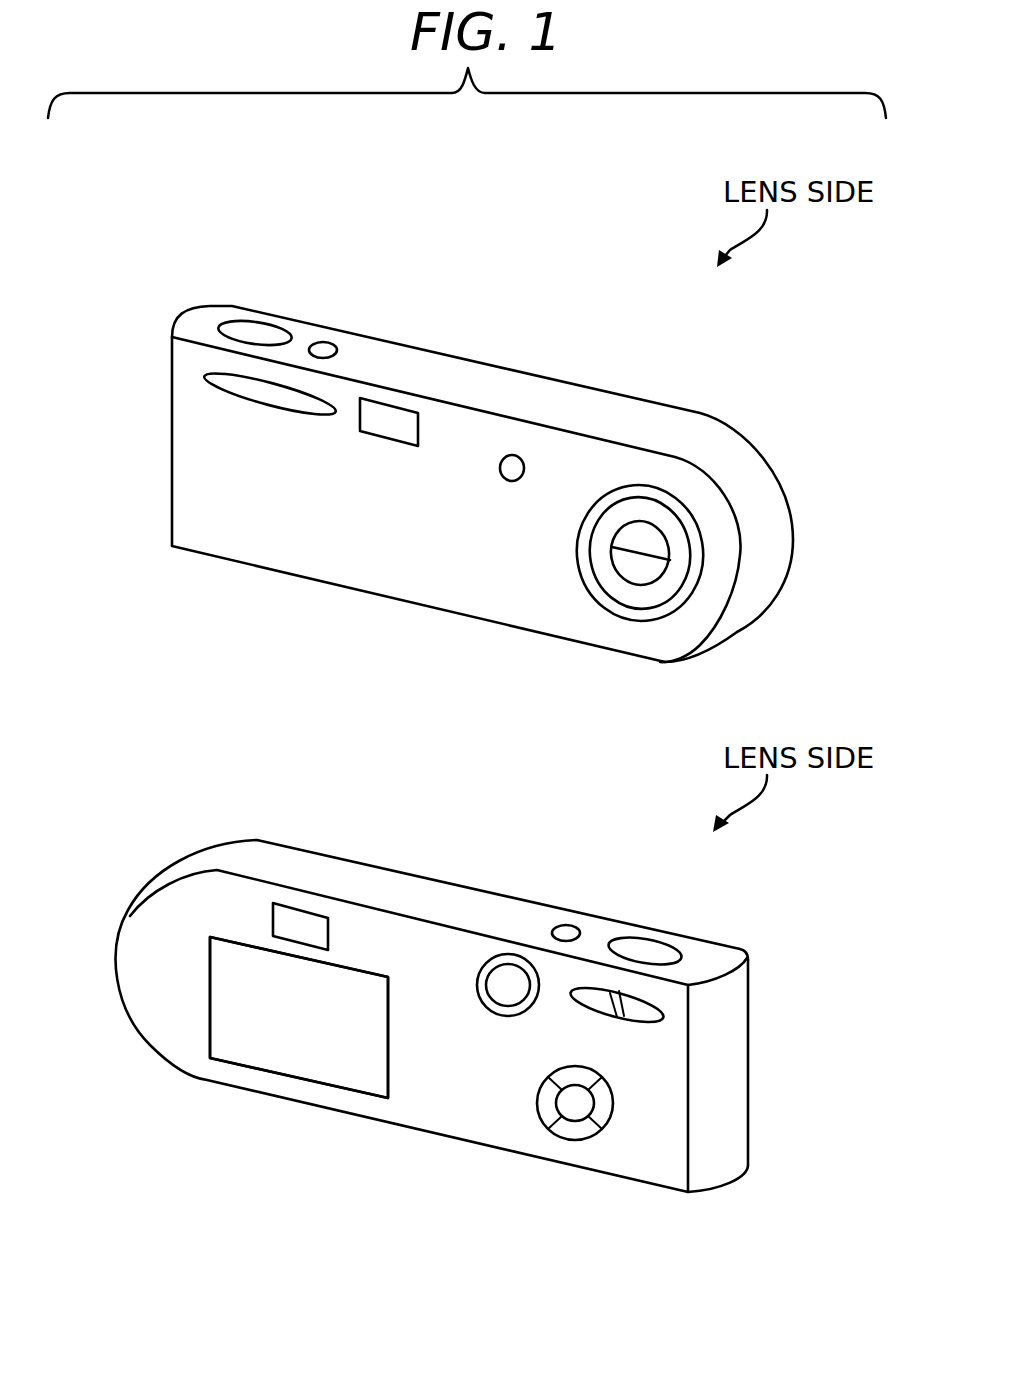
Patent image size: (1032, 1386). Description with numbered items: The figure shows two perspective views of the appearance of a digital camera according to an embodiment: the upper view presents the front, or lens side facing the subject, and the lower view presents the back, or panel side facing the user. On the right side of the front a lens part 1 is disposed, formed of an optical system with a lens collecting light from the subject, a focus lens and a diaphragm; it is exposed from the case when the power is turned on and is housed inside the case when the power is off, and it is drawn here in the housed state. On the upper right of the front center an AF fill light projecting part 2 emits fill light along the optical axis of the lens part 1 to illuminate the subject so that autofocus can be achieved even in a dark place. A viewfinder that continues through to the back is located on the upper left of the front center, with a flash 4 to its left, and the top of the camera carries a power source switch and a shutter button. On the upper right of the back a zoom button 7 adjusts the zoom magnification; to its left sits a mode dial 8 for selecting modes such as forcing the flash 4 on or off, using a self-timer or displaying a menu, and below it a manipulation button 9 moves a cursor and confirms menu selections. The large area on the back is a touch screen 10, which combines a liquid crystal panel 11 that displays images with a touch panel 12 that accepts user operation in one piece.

The lens part 1 is at (668, 523).
The AF fill light projecting part 2 is at (512, 456).
The flash 4 is at (260, 390).
The zoom button 7 is at (662, 1015).
The mode dial 8 is at (503, 973).
The manipulation button 9 is at (575, 1108).
The touch screen 10 is at (250, 1092).
The liquid crystal panel 11 is at (345, 1073).
The touch panel 12 is at (254, 1051).